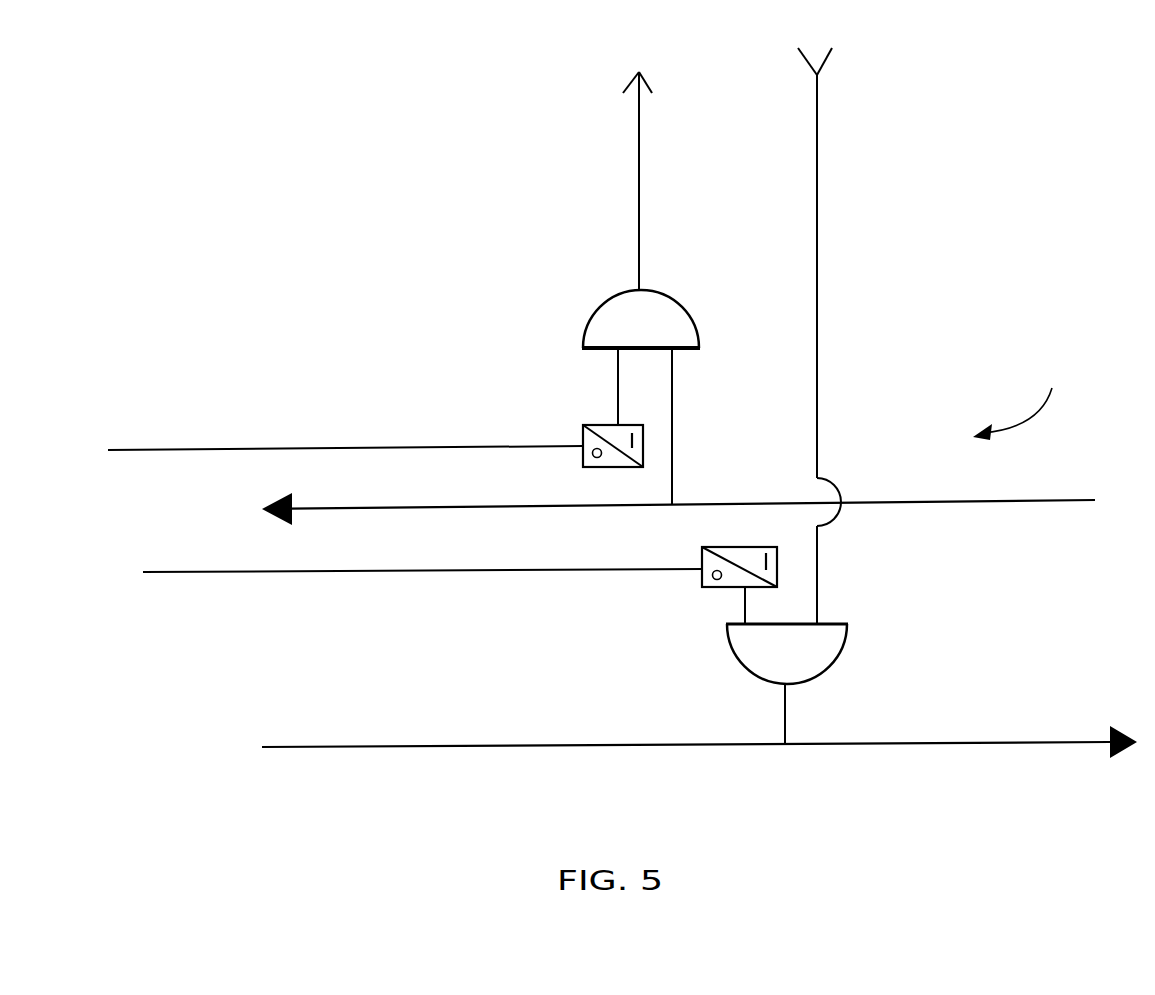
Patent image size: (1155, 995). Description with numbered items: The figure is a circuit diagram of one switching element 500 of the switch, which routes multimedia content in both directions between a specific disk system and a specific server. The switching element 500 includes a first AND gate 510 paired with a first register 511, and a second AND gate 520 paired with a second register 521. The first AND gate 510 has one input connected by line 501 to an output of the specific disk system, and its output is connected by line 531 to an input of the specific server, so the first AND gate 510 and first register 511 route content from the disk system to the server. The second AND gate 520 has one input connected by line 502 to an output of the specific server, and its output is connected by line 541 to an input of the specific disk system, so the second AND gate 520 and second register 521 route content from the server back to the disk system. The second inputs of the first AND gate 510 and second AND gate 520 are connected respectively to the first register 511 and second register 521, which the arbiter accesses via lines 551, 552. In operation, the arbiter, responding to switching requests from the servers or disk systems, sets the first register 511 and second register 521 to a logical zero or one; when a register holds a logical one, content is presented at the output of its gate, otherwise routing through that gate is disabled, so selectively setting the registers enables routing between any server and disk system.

The switching element 500 is at (1093, 370).
The line 501 is at (1000, 503).
The line 502 is at (817, 272).
The first AND gate 510 is at (592, 315).
The first register 511 is at (590, 425).
The second AND gate 520 is at (842, 655).
The second register 521 is at (707, 588).
The line 531 is at (639, 197).
The line 541 is at (915, 745).
The line 551 is at (303, 449).
The line 552 is at (323, 572).